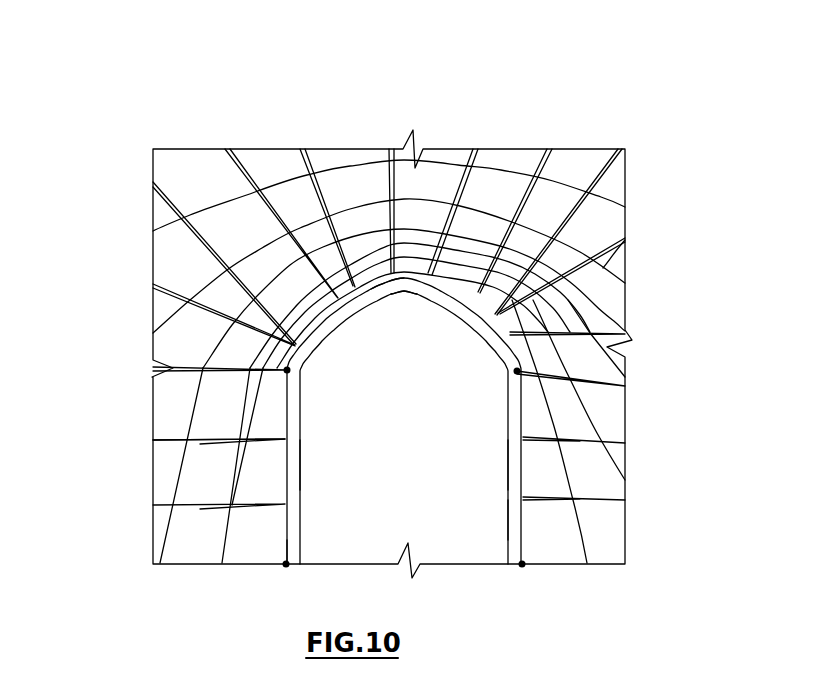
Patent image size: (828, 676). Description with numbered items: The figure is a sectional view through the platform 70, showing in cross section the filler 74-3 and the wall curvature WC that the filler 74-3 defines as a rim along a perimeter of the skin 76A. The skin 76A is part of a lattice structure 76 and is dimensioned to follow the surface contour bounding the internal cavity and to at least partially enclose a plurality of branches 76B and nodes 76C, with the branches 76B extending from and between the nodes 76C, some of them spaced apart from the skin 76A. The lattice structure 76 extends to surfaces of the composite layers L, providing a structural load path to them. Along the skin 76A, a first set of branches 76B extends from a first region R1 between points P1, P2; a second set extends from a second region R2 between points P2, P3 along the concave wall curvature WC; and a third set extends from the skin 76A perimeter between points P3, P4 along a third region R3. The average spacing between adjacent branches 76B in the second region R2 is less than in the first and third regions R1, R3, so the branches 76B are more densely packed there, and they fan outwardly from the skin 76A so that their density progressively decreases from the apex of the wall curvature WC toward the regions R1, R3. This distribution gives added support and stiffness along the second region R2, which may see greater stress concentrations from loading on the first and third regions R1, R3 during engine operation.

The platform 70 is at (177, 95).
The filler 74-3 is at (388, 340).
The lattice structure 76 is at (542, 145).
The skin 76A is at (288, 542).
The branches 76B is at (390, 151).
The nodes 76C is at (625, 286).
The first region R1 is at (300, 463).
The second region R2 is at (378, 281).
The third region R3 is at (508, 466).
The point P1 is at (286, 566).
The point P2 is at (289, 371).
The point P3 is at (515, 372).
The point P4 is at (523, 566).
The wall curvature WC is at (435, 287).
The composite layers L is at (508, 524).